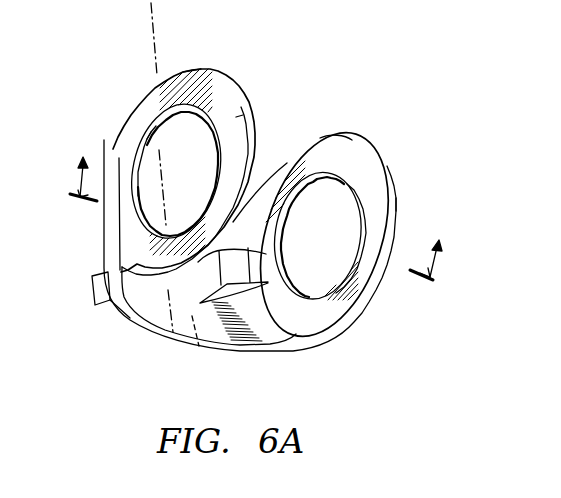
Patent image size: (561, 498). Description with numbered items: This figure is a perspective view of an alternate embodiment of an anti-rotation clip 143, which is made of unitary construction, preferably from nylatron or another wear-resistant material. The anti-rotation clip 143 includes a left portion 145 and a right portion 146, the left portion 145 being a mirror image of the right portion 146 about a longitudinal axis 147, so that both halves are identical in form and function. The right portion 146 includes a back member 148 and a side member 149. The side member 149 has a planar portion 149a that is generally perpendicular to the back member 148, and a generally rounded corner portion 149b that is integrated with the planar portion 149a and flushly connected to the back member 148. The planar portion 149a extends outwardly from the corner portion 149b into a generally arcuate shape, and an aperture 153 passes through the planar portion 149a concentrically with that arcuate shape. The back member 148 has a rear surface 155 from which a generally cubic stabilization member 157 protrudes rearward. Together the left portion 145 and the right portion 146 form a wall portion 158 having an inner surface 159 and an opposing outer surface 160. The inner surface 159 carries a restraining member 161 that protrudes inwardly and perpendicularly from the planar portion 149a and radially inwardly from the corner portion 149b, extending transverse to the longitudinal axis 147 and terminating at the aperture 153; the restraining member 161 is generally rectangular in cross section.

The anti-rotation clip 143 is at (392, 338).
The left portion 145 is at (250, 70).
The right portion 146 is at (392, 136).
The longitudinal axis 147 is at (150, 21).
The back member 148 is at (163, 332).
The side member 149 is at (398, 190).
The planar portion 149a is at (191, 67).
The corner portion 149b is at (122, 307).
The aperture 153 is at (156, 160).
The rear surface 155 is at (198, 348).
The stabilization member 157 is at (97, 298).
The wall portion 158 is at (340, 133).
The inner surface 159 is at (247, 117).
The outer surface 160 is at (110, 240).
The restraining member 161 is at (275, 262).